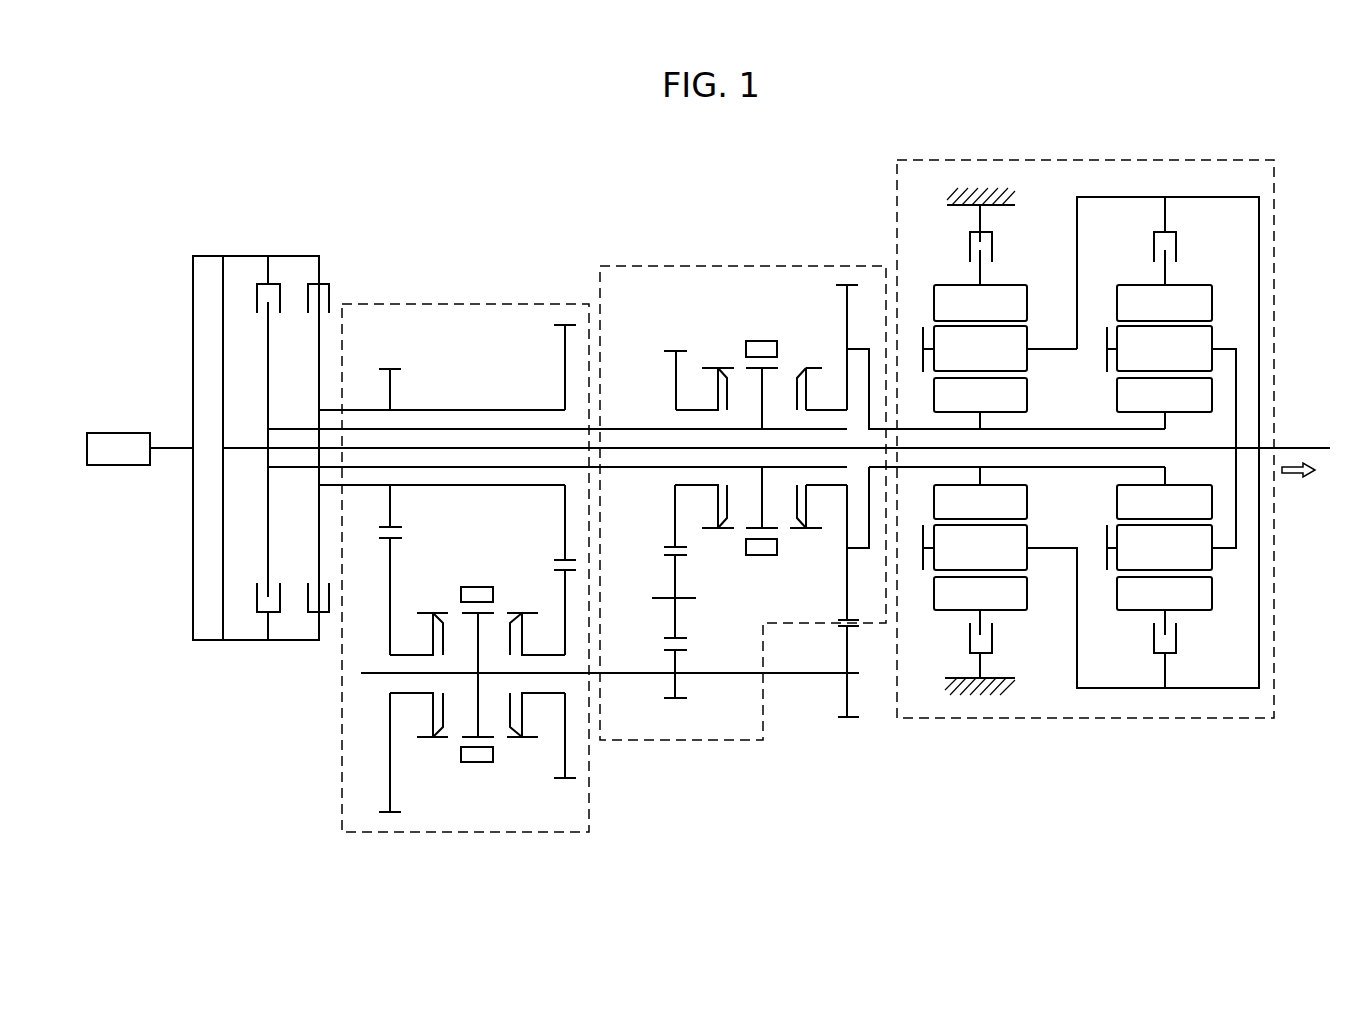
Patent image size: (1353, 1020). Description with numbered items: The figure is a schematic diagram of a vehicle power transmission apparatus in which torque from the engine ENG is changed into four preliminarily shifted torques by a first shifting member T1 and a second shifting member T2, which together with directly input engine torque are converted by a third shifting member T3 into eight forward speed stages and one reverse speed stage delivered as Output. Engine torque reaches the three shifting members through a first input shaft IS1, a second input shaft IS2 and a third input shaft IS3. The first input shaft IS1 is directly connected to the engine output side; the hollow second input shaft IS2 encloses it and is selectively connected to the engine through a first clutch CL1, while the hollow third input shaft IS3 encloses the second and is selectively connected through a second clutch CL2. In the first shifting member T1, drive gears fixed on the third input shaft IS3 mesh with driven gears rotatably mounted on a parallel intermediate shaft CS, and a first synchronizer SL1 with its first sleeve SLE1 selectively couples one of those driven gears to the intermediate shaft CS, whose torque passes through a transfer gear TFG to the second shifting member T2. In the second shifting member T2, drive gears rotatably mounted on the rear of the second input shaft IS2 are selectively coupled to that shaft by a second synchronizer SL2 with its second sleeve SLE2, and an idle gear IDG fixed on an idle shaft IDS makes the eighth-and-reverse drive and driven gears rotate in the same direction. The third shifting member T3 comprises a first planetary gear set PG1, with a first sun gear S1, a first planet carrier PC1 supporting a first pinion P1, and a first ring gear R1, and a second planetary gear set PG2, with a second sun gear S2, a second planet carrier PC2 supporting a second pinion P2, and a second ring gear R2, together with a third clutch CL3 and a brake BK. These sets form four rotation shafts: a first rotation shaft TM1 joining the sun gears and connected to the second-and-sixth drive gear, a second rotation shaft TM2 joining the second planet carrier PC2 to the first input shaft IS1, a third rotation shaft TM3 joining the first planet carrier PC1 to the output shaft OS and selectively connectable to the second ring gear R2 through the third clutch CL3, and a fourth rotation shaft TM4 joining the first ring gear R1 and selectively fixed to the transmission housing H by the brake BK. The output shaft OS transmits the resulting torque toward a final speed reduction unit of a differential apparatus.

The engine ENG is at (140, 449).
The first input shaft IS1 is at (243, 452).
The second input shaft IS2 is at (296, 470).
The third input shaft IS3 is at (367, 488).
The first clutch CL1 is at (277, 276).
The second clutch CL2 is at (326, 276).
The third clutch CL3 is at (1179, 227).
The first shifting member T1 is at (508, 299).
The second shifting member T2 is at (636, 262).
The third shifting member T3 is at (1077, 722).
The intermediate shaft CS is at (375, 678).
The first synchronizer SL1 is at (470, 770).
The second synchronizer SL2 is at (754, 560).
The first sleeve SLE1 is at (485, 758).
The second sleeve SLE2 is at (770, 556).
The idle shaft IDS is at (666, 598).
The idle gear IDG is at (673, 609).
The transfer gear TFG is at (846, 703).
The transmission housing H is at (965, 190).
The brake BK is at (1008, 234).
The first rotation shaft TM1 is at (1064, 472).
The second rotation shaft TM2 is at (1243, 355).
The third rotation shaft TM3 is at (1145, 268).
The fourth rotation shaft TM4 is at (972, 276).
The first ring gear R1 is at (980, 303).
The first pinion P1 is at (975, 349).
The first sun gear S1 is at (980, 403).
The first planet carrier PC1 is at (1056, 352).
The second ring gear R2 is at (1164, 303).
The second pinion P2 is at (1159, 349).
The second sun gear S2 is at (1164, 403).
The second planet carrier PC2 is at (1222, 348).
The first planetary gear set PG1 is at (1025, 624).
The second planetary gear set PG2 is at (1194, 622).
The output shaft OS is at (1290, 445).
The output Output is at (1308, 485).